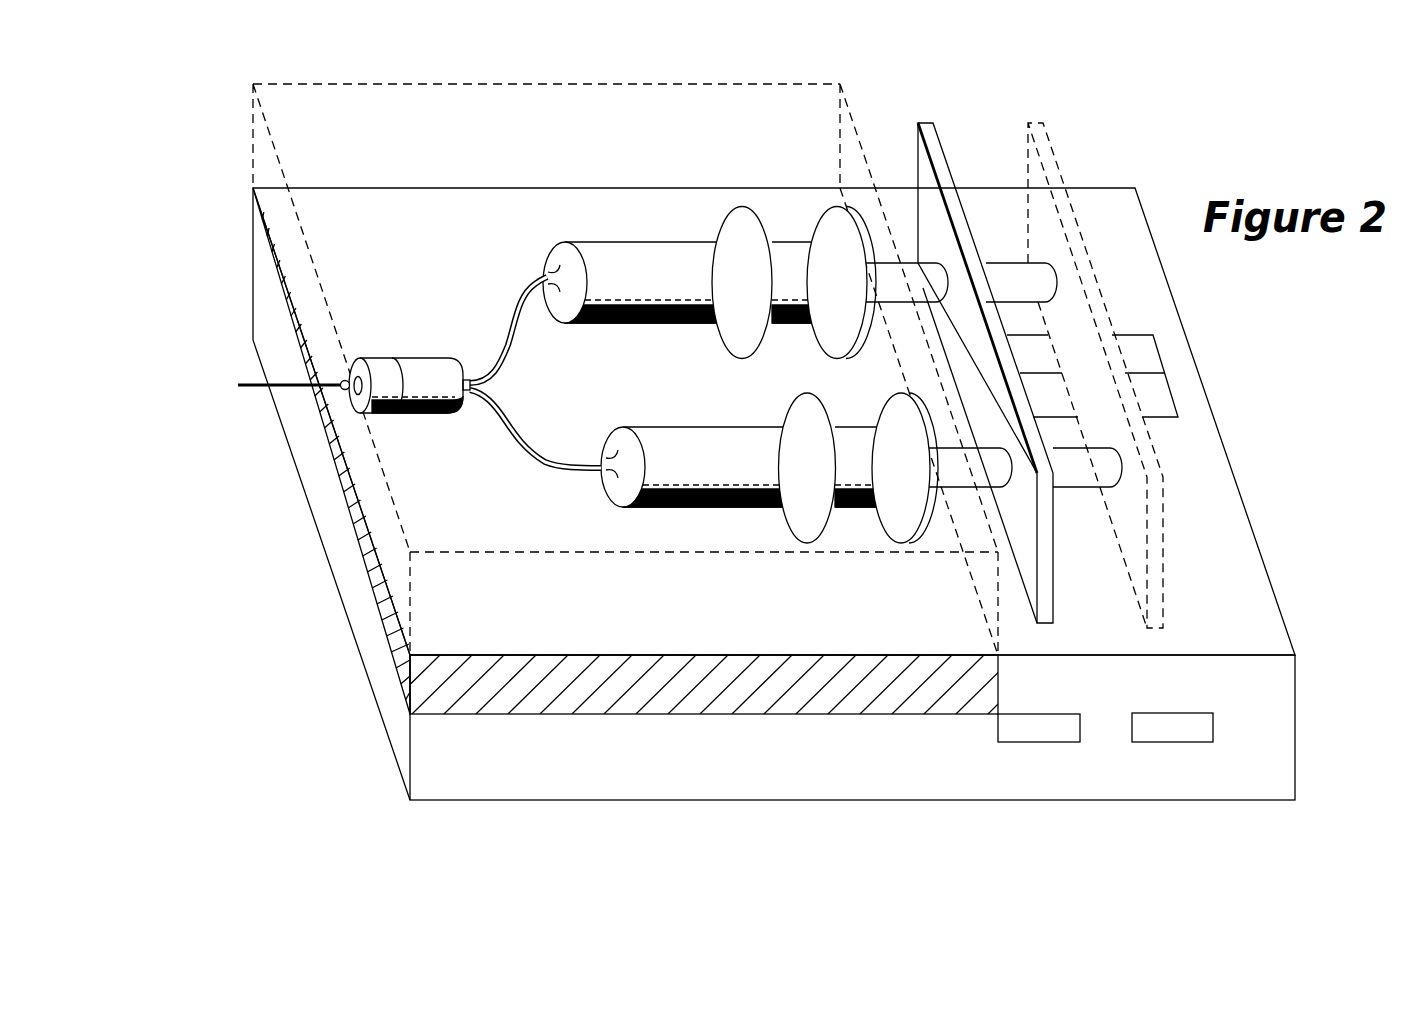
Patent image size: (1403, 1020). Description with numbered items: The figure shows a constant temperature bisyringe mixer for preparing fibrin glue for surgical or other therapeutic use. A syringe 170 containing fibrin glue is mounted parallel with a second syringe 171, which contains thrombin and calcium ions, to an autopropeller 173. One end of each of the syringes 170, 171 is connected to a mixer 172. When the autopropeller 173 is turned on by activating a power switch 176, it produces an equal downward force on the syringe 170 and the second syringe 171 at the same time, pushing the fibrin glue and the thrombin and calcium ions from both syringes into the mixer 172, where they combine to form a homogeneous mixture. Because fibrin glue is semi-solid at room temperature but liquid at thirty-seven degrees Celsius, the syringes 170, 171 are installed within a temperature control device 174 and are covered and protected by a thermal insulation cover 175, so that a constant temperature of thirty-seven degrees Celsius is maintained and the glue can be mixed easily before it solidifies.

The syringe 170 is at (740, 473).
The second syringe 171 is at (632, 260).
The mixer 172 is at (420, 370).
The autopropeller 173 is at (940, 172).
The temperature control device 174 is at (690, 690).
The thermal insulation cover 175 is at (307, 128).
The power switch 176 is at (1168, 738).